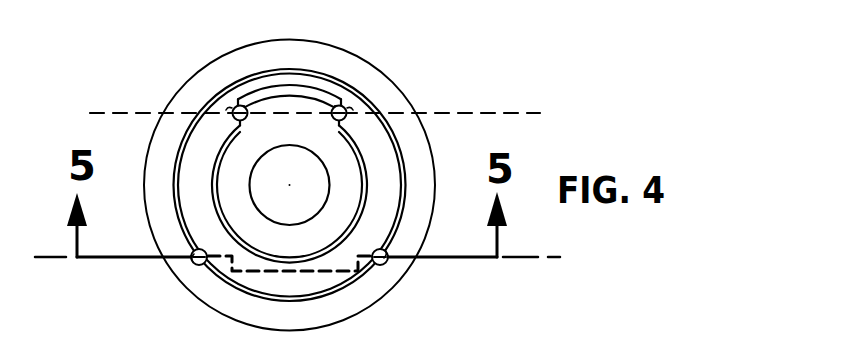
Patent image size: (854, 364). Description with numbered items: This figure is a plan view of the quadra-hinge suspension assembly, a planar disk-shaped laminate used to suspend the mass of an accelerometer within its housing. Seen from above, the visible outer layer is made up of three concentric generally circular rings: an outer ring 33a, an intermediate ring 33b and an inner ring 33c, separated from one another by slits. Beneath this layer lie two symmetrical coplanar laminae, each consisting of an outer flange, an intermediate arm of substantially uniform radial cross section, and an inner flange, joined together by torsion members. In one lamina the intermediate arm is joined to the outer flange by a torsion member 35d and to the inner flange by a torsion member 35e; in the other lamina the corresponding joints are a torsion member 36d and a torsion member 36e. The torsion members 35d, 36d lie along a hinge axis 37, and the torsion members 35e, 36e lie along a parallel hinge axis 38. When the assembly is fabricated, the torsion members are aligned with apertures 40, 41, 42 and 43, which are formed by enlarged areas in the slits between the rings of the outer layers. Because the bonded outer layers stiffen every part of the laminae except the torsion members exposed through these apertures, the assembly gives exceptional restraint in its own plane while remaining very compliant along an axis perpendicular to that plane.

The outer ring 33a is at (153, 130).
The intermediate ring 33b is at (177, 157).
The inner ring 33c is at (213, 200).
The torsion member 35d is at (192, 264).
The torsion member 35e is at (233, 113).
The torsion member 36d is at (383, 246).
The torsion member 36e is at (348, 110).
The hinge axis 37 is at (527, 258).
The hinge axis 38 is at (500, 113).
The aperture 40 is at (222, 276).
The aperture 41 is at (236, 108).
The aperture 42 is at (391, 264).
The aperture 43 is at (345, 112).